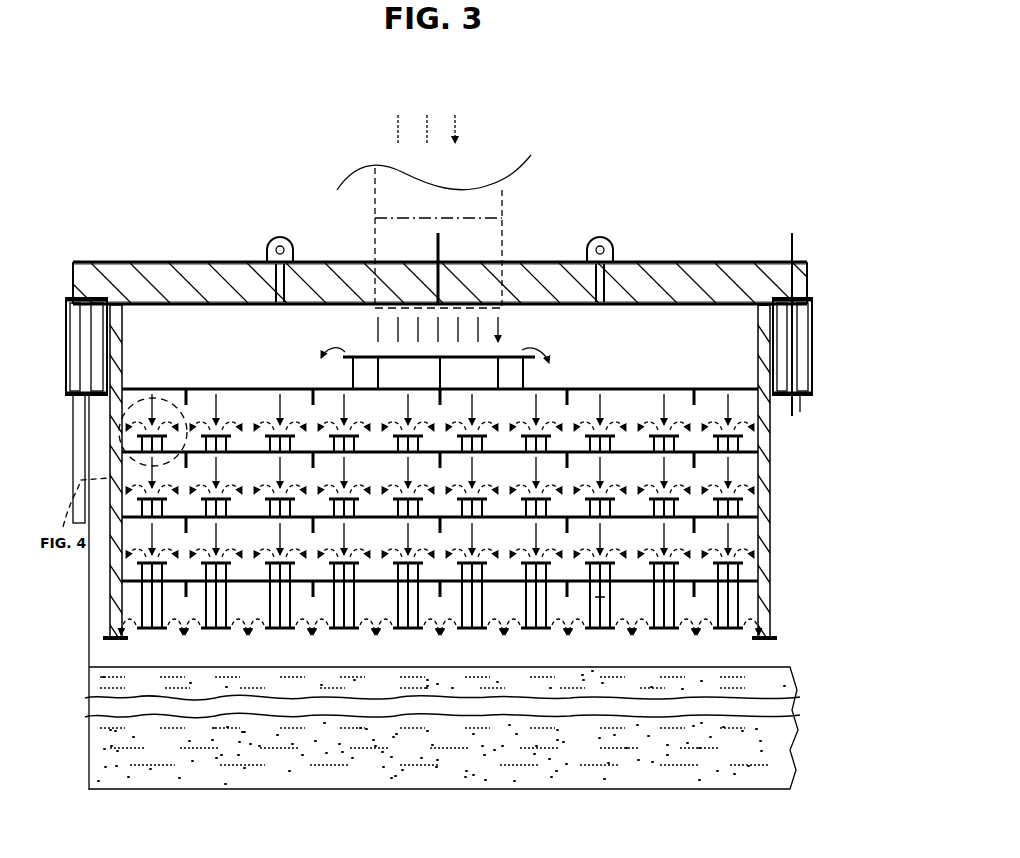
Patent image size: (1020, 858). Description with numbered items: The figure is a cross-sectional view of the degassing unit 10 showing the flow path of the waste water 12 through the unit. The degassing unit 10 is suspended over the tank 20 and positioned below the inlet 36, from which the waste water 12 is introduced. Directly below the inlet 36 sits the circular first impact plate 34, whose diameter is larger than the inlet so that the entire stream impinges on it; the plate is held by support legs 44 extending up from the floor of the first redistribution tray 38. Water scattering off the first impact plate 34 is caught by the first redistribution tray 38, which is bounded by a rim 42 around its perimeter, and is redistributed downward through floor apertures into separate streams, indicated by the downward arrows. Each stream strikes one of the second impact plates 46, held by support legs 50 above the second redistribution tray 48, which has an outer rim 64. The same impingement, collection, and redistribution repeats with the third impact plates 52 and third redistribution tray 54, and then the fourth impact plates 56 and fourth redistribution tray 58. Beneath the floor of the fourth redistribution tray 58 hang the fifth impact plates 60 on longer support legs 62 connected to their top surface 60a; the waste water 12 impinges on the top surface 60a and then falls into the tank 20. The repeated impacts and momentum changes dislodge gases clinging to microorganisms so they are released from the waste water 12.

The degassing unit 10 is at (584, 92).
The waste water 12 is at (428, 728).
The tank 20 is at (88, 735).
The first impact plate 34 is at (517, 353).
The inlet 36 is at (507, 232).
The first redistribution tray 38 is at (614, 402).
The rim 42 is at (759, 306).
The support legs 44 is at (605, 432).
The second impact plates 46 is at (643, 437).
The second redistribution tray 48 is at (247, 450).
The support legs 50 is at (688, 436).
The third impact plates 52 is at (733, 497).
The third redistribution tray 54 is at (712, 518).
The fourth impact plates 56 is at (601, 562).
The fourth redistribution tray 58 is at (692, 580).
The fifth impact plates 60 is at (598, 630).
The top surface 60a is at (673, 612).
The support legs 62 is at (597, 597).
The outer rims 64 is at (759, 368).